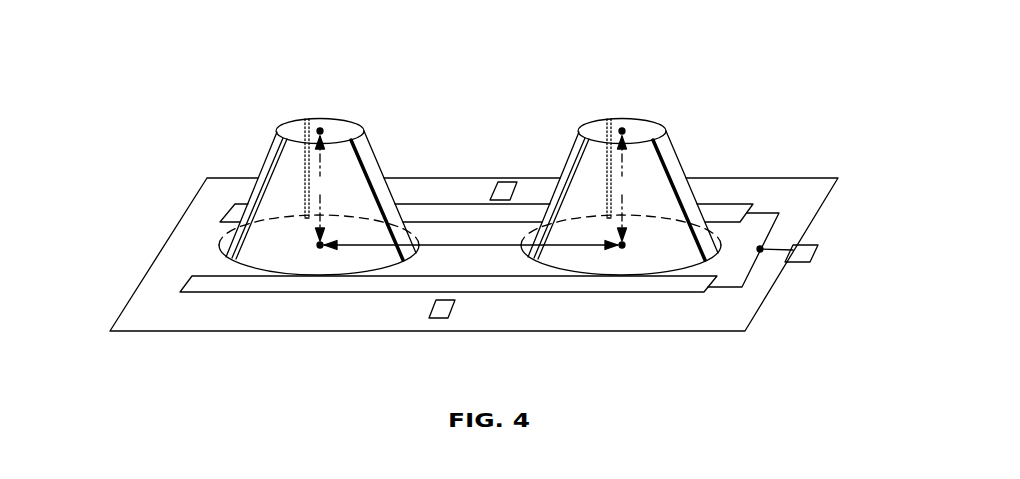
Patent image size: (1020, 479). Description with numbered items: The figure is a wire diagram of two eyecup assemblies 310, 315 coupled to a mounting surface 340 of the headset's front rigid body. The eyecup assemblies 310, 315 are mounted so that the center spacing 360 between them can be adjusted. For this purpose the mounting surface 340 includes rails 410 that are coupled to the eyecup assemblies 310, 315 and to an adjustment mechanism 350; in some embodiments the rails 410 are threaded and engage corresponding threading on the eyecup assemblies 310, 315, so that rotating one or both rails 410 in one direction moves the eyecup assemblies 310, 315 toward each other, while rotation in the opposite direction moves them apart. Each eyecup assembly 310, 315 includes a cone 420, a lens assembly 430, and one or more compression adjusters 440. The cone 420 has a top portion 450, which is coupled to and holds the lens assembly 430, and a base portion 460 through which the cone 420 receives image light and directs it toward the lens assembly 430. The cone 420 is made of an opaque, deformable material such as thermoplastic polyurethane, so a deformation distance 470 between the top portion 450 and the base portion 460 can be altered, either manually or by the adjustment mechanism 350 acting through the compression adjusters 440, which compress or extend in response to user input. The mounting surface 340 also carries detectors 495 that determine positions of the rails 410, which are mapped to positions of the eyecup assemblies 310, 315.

The eyecup assembly 310 is at (288, 153).
The eyecup assembly 315 is at (618, 232).
The mounting surface 340 is at (120, 337).
The adjustment mechanism 350 is at (813, 270).
The center spacing 360 is at (490, 258).
The rail 410 is at (213, 208).
The cone 420 is at (705, 200).
The lens assembly 430 is at (540, 129).
The compression adjuster 440 is at (270, 140).
The top portion 450 is at (565, 132).
The base portion 460 is at (647, 285).
The deformation distance 470 is at (324, 188).
The detector 495 is at (489, 210).